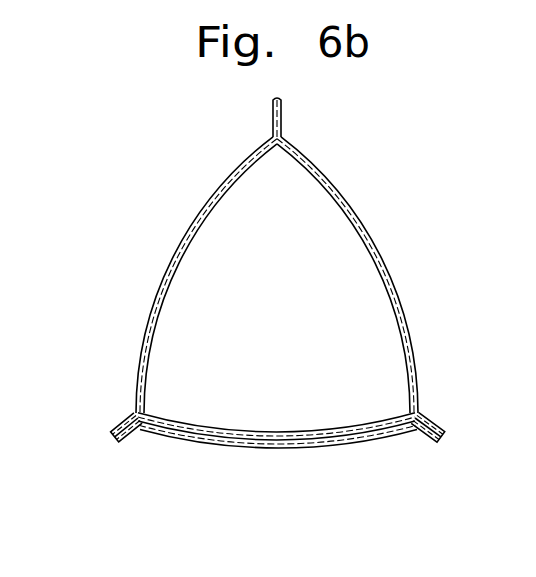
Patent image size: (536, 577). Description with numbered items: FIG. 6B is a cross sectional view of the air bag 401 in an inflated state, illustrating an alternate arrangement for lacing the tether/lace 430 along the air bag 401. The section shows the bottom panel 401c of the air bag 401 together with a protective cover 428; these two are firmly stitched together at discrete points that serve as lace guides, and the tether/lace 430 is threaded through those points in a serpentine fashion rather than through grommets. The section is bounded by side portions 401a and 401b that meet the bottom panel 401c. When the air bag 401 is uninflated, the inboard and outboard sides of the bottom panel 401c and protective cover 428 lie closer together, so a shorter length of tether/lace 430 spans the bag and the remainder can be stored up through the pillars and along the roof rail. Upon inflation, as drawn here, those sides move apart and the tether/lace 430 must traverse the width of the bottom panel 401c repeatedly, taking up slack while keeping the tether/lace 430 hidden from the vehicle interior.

The air bag 401 is at (133, 315).
The right curved frame strand 401a is at (363, 234).
The left curved frame strand 401b is at (192, 233).
The bottom panel 401c is at (276, 431).
The protective cover 428 is at (273, 450).
The tether/lace 430 is at (392, 436).